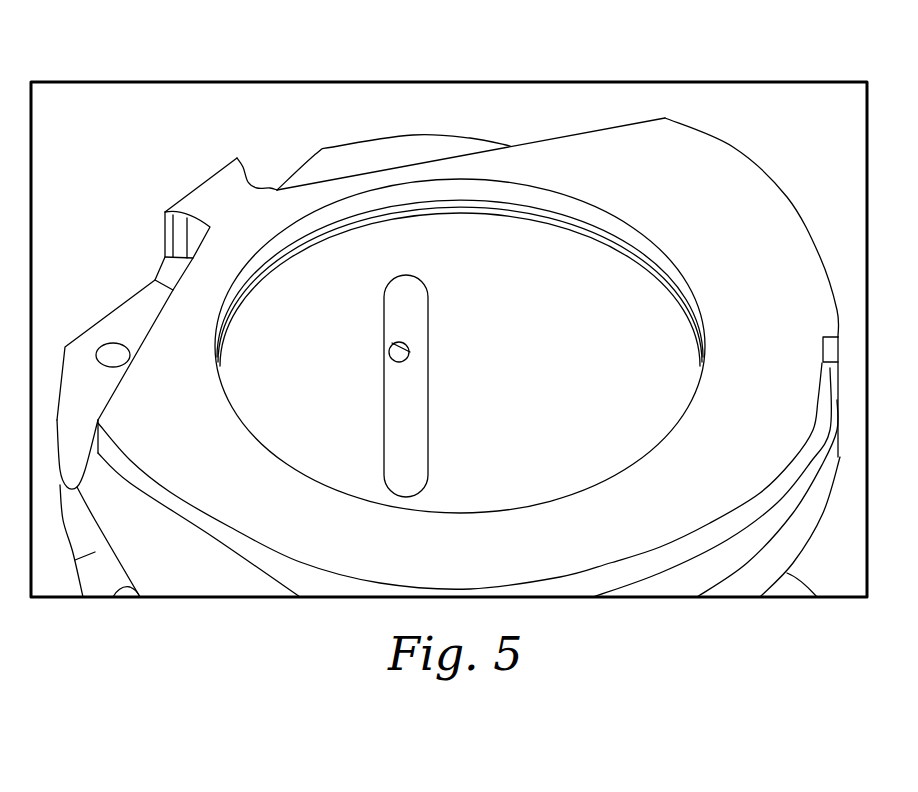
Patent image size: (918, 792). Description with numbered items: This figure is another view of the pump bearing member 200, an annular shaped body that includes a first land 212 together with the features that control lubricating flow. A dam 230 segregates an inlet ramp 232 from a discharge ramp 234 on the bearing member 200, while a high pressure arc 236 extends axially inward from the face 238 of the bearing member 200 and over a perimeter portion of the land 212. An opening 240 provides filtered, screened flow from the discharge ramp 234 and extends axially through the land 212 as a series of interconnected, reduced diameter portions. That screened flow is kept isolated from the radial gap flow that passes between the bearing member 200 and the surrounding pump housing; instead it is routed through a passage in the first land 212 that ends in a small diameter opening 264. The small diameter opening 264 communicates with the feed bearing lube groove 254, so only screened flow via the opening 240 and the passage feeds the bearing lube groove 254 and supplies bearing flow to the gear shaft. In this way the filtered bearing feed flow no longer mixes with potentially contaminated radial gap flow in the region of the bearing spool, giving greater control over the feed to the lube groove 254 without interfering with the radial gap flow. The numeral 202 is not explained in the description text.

The pump bearing member 200 is at (254, 600).
The cap body 202 is at (630, 385).
The first land 212 is at (73, 578).
The dam 230 is at (212, 195).
The inlet ramp 232 is at (365, 153).
The discharge ramp 234 is at (137, 323).
The high pressure arc 236 is at (787, 507).
The face 238 is at (717, 190).
The opening 240 is at (113, 350).
The feed bearing lube groove 254 is at (405, 317).
The small diameter opening 264 is at (400, 350).